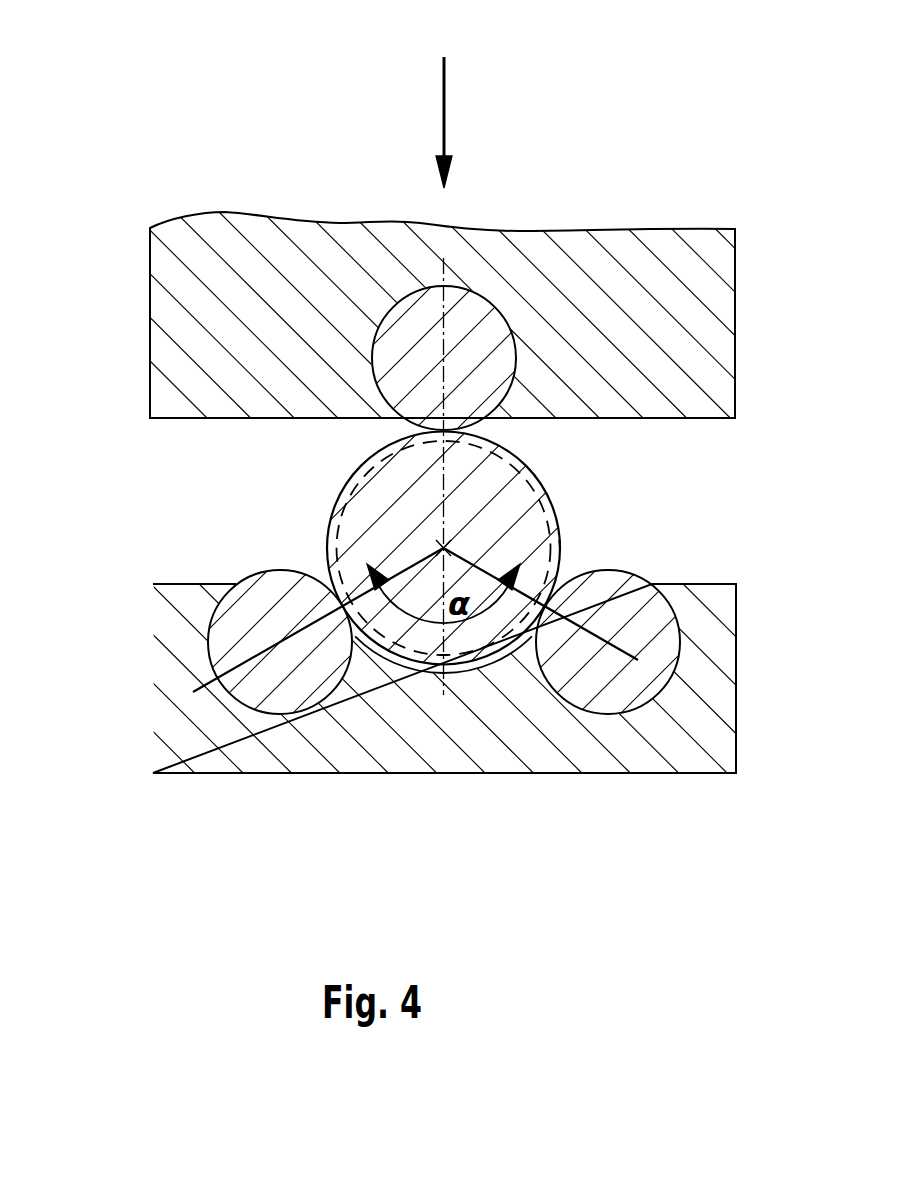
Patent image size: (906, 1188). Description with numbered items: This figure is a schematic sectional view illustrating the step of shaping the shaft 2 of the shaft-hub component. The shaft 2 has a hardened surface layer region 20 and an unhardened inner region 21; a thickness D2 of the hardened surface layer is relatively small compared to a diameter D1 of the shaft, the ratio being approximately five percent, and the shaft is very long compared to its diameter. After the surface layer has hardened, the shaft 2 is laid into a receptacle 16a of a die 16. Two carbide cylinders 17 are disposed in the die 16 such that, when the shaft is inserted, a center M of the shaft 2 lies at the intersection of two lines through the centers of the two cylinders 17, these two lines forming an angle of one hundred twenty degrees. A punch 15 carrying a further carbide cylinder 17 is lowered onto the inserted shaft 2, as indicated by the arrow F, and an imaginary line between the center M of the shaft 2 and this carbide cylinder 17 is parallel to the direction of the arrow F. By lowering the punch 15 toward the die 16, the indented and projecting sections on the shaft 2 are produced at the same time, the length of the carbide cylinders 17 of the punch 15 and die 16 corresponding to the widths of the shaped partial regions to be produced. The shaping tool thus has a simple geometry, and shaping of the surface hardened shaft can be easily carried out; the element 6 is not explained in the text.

The shaft 2 is at (548, 483).
The outer surface of rolling element 6 is at (562, 545).
The punch 15 is at (167, 300).
The die 16 is at (215, 748).
The receptacle 16a is at (469, 665).
The carbide cylinders 17 is at (478, 326).
The hardened surface layer region 20 is at (550, 510).
The unhardened inner region 21 is at (485, 542).
The diameter of the shaft D1 is at (433, 520).
The thickness of the hardened surface layer D2 is at (562, 556).
The center of the shaft M is at (440, 547).
The arrow F is at (446, 102).